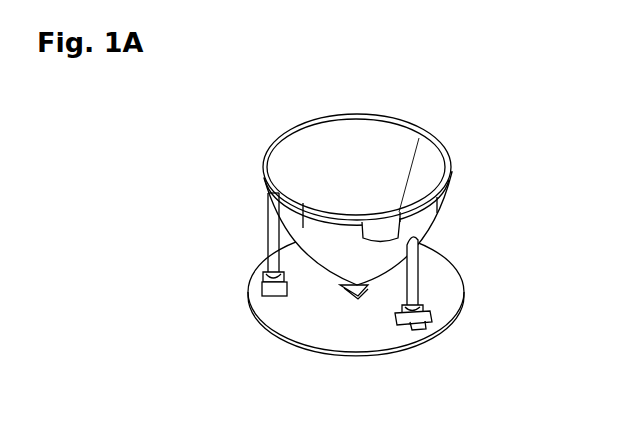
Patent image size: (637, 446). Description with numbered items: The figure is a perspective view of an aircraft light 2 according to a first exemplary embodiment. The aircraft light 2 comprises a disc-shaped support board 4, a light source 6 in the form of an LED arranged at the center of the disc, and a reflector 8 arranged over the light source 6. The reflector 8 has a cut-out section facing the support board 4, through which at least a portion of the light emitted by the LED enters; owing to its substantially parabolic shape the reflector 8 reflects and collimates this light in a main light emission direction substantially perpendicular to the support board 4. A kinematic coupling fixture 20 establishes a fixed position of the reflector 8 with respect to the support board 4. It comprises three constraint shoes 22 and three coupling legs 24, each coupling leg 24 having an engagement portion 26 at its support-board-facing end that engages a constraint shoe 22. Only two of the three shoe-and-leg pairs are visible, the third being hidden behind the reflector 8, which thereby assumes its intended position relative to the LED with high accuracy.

The aircraft light 2 is at (320, 235).
The support board 4 is at (364, 337).
The light source 6 is at (348, 290).
The reflector 8 is at (412, 122).
The kinematic coupling fixture 20 is at (339, 295).
The constraint shoe 22 is at (276, 291).
The coupling leg 24 is at (273, 236).
The engagement portion 26 is at (268, 263).